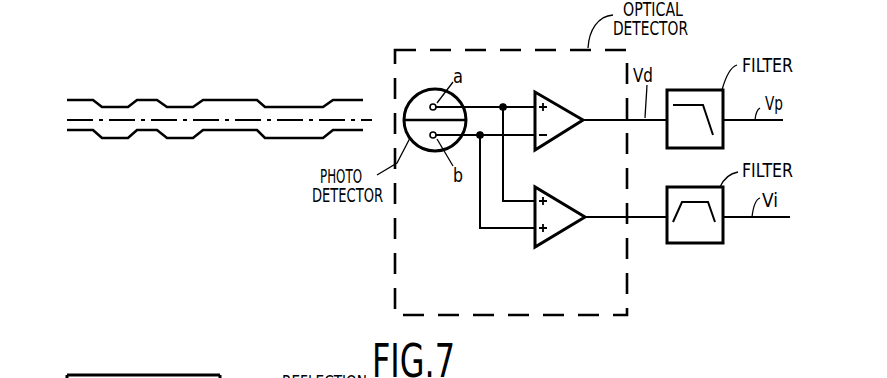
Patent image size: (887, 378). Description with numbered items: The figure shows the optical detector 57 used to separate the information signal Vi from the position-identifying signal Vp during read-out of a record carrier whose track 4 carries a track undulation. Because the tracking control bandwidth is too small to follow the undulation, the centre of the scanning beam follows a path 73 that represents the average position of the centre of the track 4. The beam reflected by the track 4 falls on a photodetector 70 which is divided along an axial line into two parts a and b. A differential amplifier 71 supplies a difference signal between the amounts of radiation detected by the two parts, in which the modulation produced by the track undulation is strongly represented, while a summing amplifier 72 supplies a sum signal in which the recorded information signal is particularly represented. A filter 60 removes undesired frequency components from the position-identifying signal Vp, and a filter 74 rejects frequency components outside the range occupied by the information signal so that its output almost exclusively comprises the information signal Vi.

The track 4 is at (177, 139).
The path 73 is at (282, 122).
The optical detector 57 is at (538, 48).
The photodetector 70 is at (418, 148).
The differential amplifier 71 is at (567, 108).
The summing amplifier 72 is at (563, 232).
The filter 60 is at (705, 90).
The filter 74 is at (690, 243).